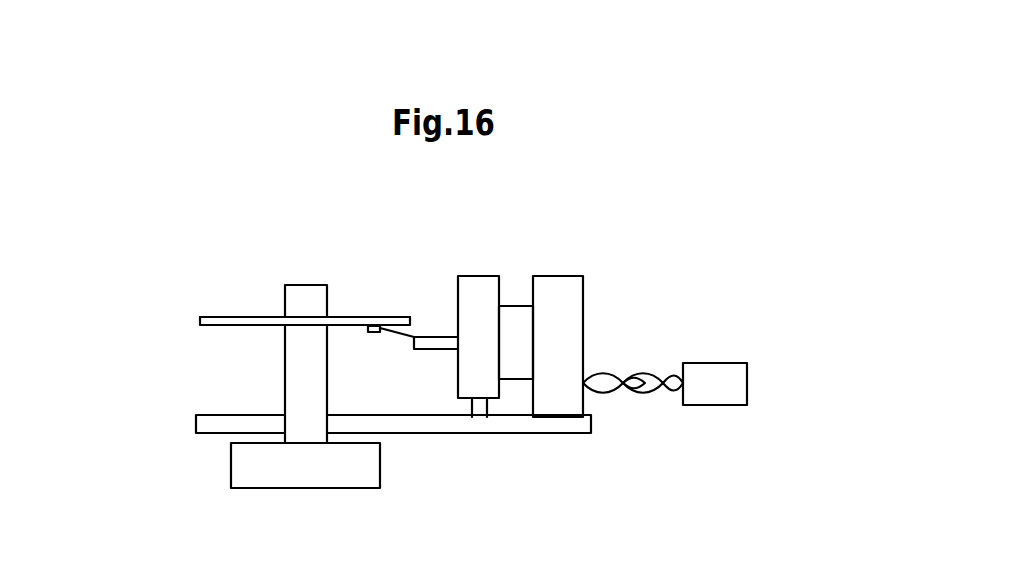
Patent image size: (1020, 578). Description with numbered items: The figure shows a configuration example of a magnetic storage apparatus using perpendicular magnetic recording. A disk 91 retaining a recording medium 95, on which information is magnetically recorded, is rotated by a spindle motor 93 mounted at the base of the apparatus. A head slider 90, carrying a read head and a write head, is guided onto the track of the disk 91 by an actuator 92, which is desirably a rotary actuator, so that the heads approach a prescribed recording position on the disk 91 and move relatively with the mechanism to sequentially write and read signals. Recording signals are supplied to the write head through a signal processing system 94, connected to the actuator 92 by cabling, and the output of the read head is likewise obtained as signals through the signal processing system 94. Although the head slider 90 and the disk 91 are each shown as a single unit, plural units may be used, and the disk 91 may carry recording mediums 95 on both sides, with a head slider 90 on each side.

The head slider 90 is at (377, 325).
The disk 91 is at (218, 325).
The actuator 92 is at (477, 284).
The spindle motor 93 is at (380, 455).
The signal processing system 94 is at (717, 363).
The recording medium 95 is at (200, 325).